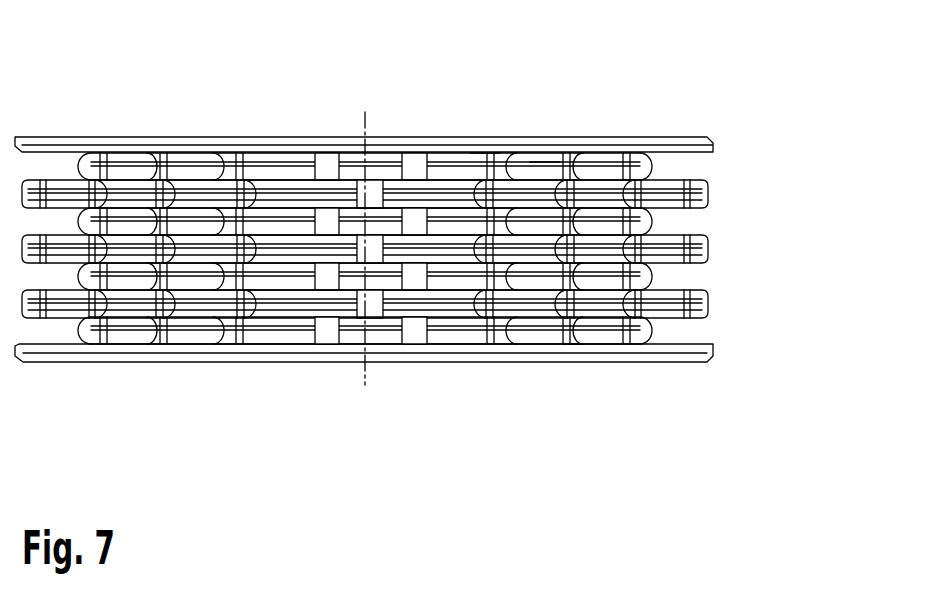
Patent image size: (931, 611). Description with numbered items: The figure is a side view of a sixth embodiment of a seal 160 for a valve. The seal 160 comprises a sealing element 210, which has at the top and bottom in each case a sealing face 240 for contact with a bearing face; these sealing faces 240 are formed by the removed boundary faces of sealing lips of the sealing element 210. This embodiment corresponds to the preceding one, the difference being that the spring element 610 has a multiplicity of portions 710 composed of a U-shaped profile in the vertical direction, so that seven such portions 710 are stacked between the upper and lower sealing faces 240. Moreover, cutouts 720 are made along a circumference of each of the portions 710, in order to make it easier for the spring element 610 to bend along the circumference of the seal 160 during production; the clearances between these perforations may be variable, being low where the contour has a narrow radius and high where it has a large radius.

The seal 160 is at (417, 227).
The sealing element 210 is at (483, 150).
The sealing face 240 is at (703, 134).
The spring element 610 is at (546, 162).
The portion 710 is at (748, 208).
The cutout 720 is at (575, 342).